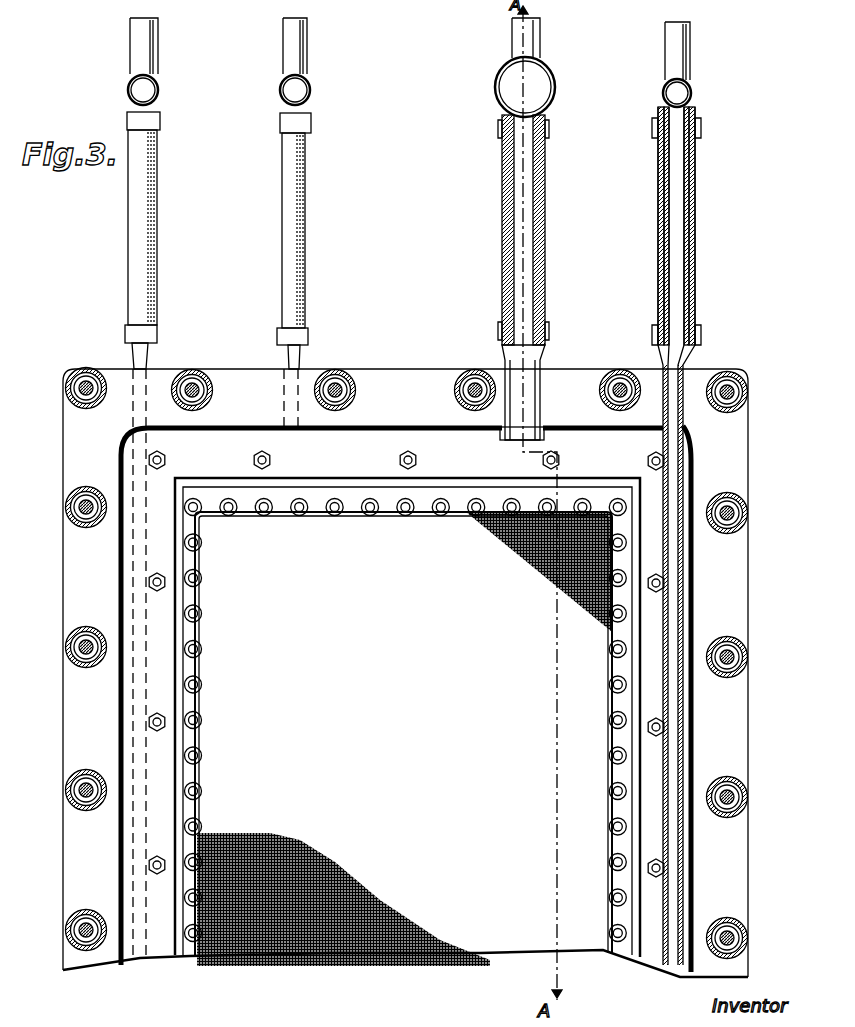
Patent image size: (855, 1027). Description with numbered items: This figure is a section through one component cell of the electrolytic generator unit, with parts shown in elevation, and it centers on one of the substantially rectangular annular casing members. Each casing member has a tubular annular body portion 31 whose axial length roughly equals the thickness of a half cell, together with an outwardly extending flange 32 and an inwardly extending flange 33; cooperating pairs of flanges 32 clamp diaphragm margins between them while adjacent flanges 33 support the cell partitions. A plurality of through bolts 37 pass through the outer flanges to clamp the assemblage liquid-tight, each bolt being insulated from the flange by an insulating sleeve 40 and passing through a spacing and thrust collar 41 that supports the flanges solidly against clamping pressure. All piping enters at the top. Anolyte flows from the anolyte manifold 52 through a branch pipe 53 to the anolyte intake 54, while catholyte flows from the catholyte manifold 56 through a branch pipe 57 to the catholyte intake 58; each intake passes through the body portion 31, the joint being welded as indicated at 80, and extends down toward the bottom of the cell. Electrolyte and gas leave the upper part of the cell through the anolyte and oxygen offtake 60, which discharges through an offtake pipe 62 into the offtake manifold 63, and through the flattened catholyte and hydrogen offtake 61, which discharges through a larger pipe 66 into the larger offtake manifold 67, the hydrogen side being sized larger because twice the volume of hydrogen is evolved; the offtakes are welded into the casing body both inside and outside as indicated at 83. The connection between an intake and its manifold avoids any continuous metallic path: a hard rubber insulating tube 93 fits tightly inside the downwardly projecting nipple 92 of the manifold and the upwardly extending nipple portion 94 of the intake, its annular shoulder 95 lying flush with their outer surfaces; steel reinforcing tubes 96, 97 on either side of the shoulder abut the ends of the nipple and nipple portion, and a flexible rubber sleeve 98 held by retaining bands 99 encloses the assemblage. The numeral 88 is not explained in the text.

The annular body portion 31 is at (345, 432).
The outwardly extending flange 32 is at (410, 378).
The inwardly extending flange 33 is at (407, 711).
The through bolt 37 is at (186, 372).
The insulating sleeve 40 is at (72, 402).
The spacing and thrust collar 41 is at (86, 492).
The anolyte manifold 52 is at (152, 88).
The branch pipe 53 is at (157, 232).
The anolyte intake 54 is at (135, 363).
The catholyte manifold 56 is at (692, 88).
The branch pipe 57 is at (661, 172).
The catholyte intake 58 is at (688, 366).
The anolyte and oxygen offtake 60 is at (300, 360).
The catholyte and hydrogen offtake 61 is at (546, 362).
The offtake pipe 62 is at (305, 225).
The anolyte offtake manifold 63 is at (305, 88).
The offtake pipe 66 is at (546, 202).
The catholyte offtake manifold 67 is at (556, 80).
The welded joint 80 is at (686, 442).
The welded joint 83 is at (542, 428).
The tube upper portion 88 is at (158, 52).
The nipple 92 is at (658, 146).
The insulating tube 93 is at (665, 186).
The nipple portion 94 is at (658, 322).
The annular shoulder 95 is at (696, 235).
The steel reinforcing tube 96 is at (697, 278).
The steel reinforcing tube 97 is at (696, 190).
The flexible sleeve 98 is at (696, 212).
The retaining band 99 is at (702, 126).